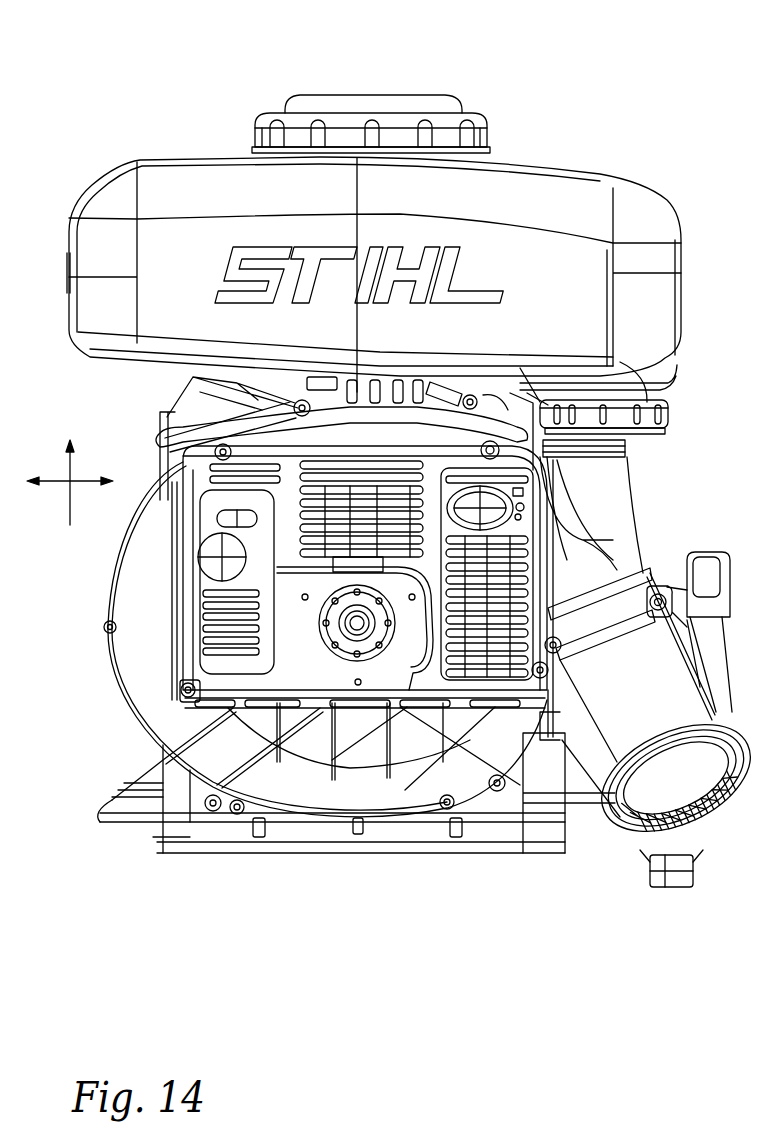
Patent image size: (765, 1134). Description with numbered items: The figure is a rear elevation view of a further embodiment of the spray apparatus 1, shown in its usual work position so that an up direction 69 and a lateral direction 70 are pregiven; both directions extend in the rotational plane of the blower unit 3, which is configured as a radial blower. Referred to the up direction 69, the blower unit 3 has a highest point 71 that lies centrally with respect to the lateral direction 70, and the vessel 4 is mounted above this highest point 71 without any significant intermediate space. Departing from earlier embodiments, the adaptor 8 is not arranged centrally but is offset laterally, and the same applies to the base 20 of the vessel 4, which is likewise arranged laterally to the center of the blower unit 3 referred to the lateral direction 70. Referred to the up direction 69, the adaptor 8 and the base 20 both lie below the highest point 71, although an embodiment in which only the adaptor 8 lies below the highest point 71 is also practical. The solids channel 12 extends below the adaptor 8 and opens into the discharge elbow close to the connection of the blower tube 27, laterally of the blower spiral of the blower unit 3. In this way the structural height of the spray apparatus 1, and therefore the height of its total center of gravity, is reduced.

The spray apparatus 1 is at (520, 146).
The blower unit 3 is at (143, 672).
The vessel 4 is at (607, 194).
The adaptor 8 is at (616, 447).
The solids channel 12 is at (623, 507).
The base 20 is at (613, 428).
The blower tube 27 is at (670, 737).
The up direction 69 is at (70, 463).
The lateral direction 70 is at (50, 483).
The highest point 71 is at (378, 378).